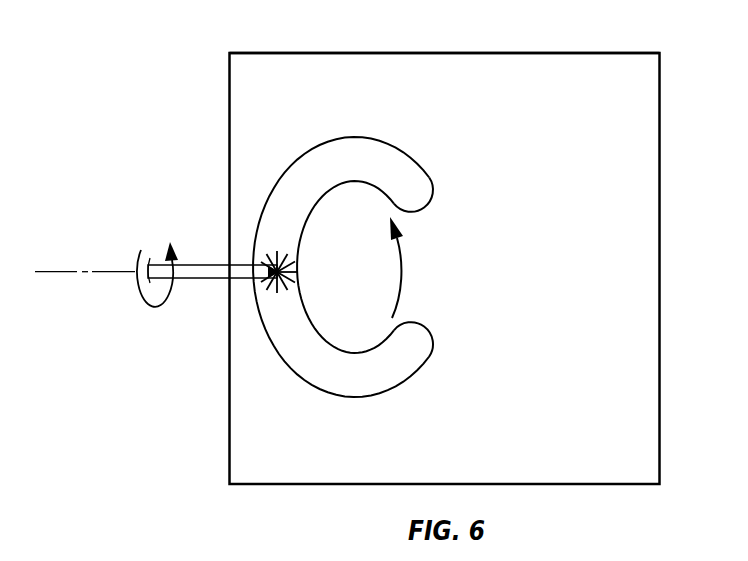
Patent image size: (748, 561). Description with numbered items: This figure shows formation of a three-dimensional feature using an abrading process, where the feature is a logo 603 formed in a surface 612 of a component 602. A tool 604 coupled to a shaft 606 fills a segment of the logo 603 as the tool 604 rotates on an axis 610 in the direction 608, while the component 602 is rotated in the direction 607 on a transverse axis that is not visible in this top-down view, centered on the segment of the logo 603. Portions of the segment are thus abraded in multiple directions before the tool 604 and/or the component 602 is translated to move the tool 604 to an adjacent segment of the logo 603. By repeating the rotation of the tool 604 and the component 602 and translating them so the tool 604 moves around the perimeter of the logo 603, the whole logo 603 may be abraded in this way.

The component 602 is at (660, 388).
The surface 612 is at (577, 65).
The logo 603 is at (436, 191).
The tool 604 is at (304, 250).
The shaft 606 is at (204, 264).
The direction 607 is at (401, 278).
The direction 608 is at (156, 308).
The axis 610 is at (64, 268).